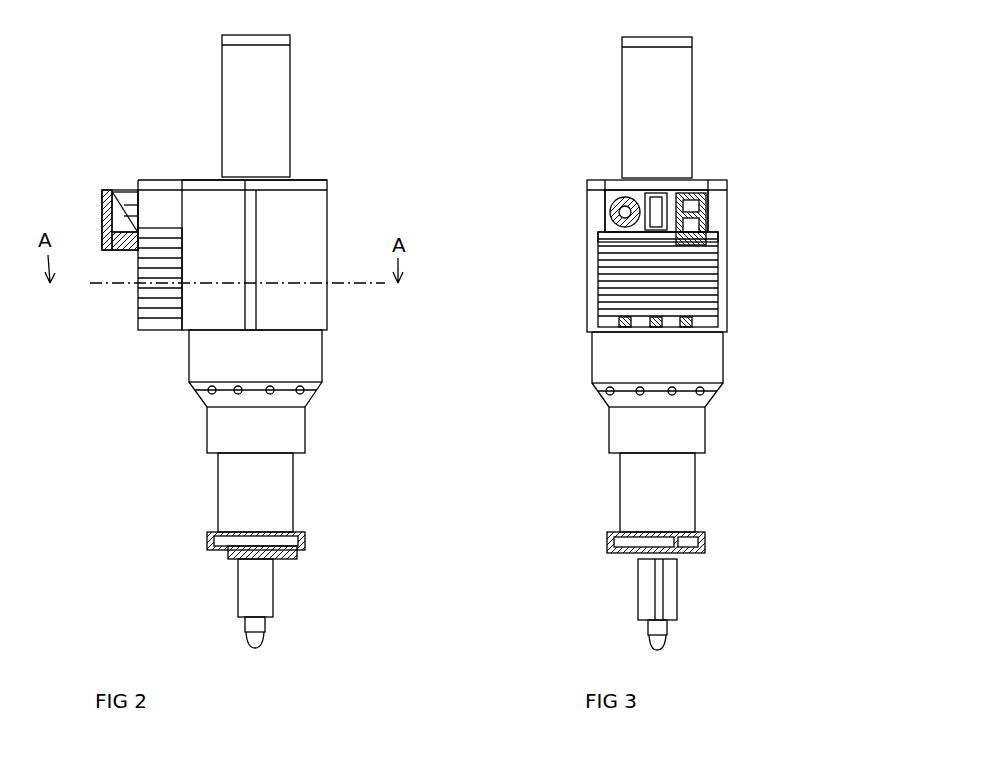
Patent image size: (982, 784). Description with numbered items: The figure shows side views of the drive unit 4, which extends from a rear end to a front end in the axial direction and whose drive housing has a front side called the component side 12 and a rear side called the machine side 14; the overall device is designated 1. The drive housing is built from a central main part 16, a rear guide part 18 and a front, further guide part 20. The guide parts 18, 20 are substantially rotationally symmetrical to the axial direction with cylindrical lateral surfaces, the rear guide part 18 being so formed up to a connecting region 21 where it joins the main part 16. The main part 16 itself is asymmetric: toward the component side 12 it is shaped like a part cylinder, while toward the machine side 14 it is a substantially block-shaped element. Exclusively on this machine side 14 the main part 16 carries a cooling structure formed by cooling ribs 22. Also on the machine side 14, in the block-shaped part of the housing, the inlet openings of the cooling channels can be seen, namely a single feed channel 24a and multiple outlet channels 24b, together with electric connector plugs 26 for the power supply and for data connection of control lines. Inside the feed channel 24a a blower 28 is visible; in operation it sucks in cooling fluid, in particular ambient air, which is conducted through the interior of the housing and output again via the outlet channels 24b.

In FIG. 3, the measuring device 1 is at (633, 115).
In FIG. 2, the drive unit 4 is at (337, 106).
In FIG. 3, the drive unit 4 is at (762, 106).
In FIG. 2, the component side 12 is at (412, 380).
In FIG. 2, the machine side 14 is at (86, 345).
In FIG. 2, the main part 16 is at (305, 245).
In FIG. 3, the main part 16 is at (727, 250).
In FIG. 2, the rear guide part 18 is at (223, 113).
In FIG. 2, the front guide part 20 is at (308, 373).
In FIG. 3, the front guide part 20 is at (690, 440).
In FIG. 2, the connecting region 21 is at (328, 180).
In FIG. 3, the connecting region 21 is at (727, 183).
In FIG. 2, the cooling ribs 22 is at (150, 313).
In FIG. 3, the feed channel 24a is at (603, 223).
In FIG. 3, the outlet channels 24b is at (625, 327).
In FIG. 3, the electric connector plugs 26 is at (707, 213).
In FIG. 3, the blower 28 is at (597, 181).